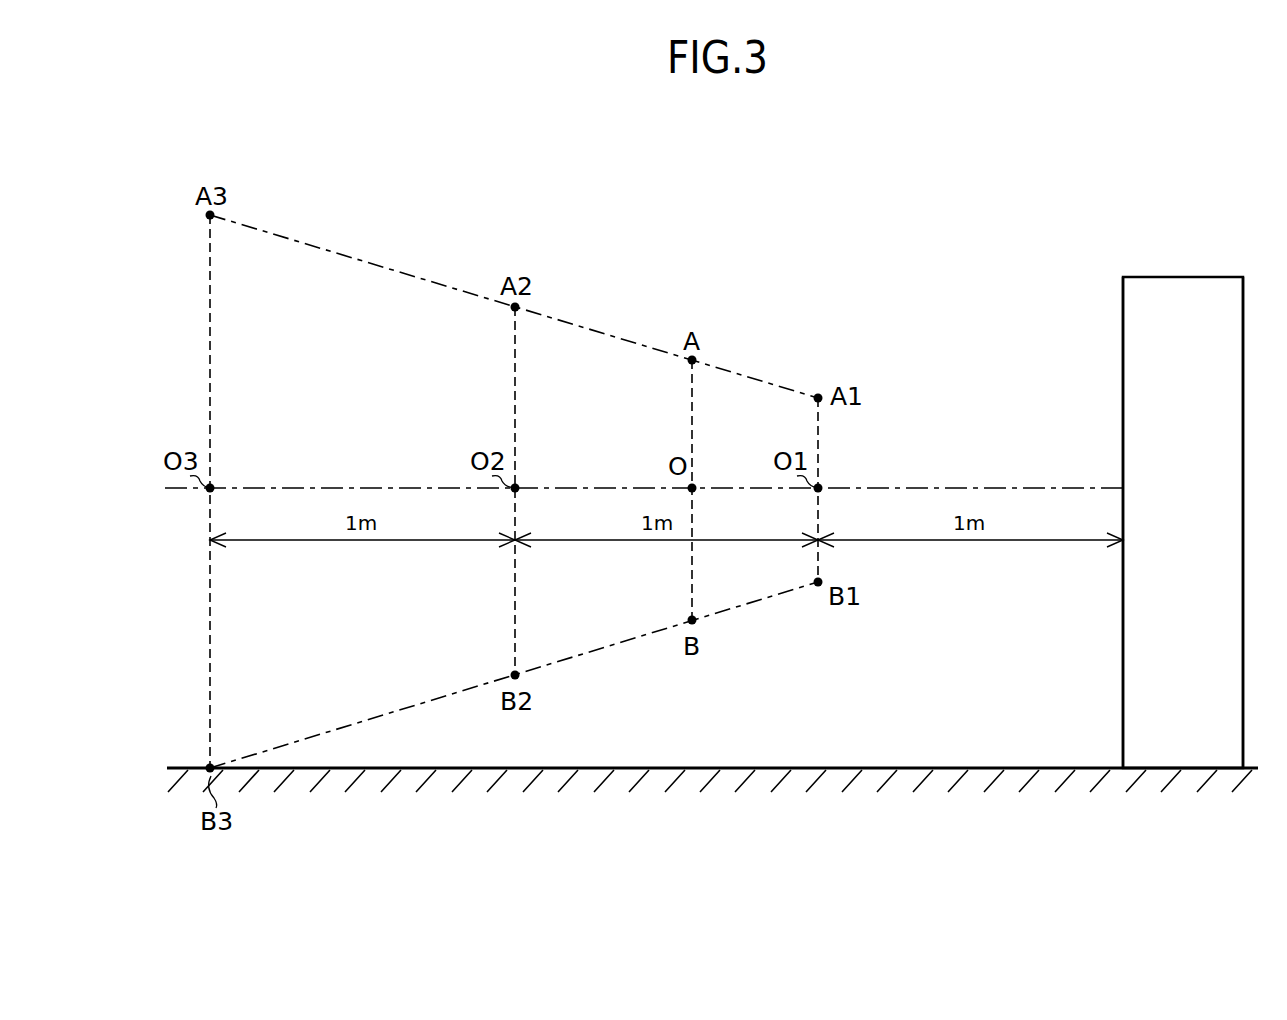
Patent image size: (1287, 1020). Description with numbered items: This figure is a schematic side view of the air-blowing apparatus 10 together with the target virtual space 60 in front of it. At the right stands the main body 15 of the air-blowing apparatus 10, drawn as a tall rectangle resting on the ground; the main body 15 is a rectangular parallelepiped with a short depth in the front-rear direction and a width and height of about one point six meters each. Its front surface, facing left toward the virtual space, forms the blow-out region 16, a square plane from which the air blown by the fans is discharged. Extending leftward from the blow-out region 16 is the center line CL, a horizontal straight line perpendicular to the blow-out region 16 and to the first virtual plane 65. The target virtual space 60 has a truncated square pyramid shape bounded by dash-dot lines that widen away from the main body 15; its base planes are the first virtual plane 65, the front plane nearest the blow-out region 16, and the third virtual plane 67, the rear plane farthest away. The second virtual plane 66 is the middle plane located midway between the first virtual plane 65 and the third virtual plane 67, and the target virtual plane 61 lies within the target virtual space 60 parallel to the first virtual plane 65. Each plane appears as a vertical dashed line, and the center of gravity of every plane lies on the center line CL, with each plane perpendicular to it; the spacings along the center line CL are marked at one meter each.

The air-blowing apparatus 10 is at (1180, 278).
The main body 15 is at (1243, 277).
The blow-out region 16 is at (1121, 291).
The target virtual space 60 is at (332, 280).
The target virtual plane 61 is at (692, 416).
The first virtual plane 65 is at (818, 429).
The second virtual plane 66 is at (515, 369).
The third virtual plane 67 is at (210, 322).
The center line CL is at (922, 487).